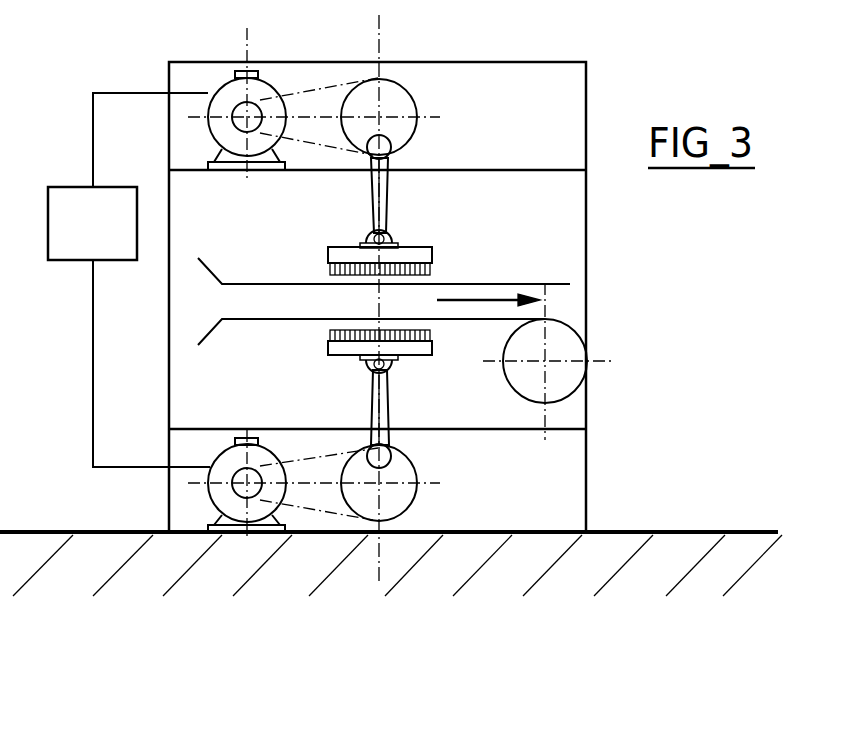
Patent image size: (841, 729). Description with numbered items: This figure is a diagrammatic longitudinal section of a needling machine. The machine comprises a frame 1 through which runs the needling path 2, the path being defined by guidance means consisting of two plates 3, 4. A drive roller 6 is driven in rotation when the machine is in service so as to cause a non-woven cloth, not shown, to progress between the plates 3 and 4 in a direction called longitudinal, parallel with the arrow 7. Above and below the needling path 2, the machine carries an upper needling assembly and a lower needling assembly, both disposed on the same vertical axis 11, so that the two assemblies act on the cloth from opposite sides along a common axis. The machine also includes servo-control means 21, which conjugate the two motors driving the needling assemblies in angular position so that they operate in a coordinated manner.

The frame 1 is at (572, 50).
The needling path 2 is at (384, 301).
The plate 3 is at (472, 283).
The plate 4 is at (462, 322).
The drive roller 6 is at (573, 387).
The arrow 7 is at (502, 283).
The vertical axis 11 is at (379, 43).
The servo-control means 21 is at (129, 280).